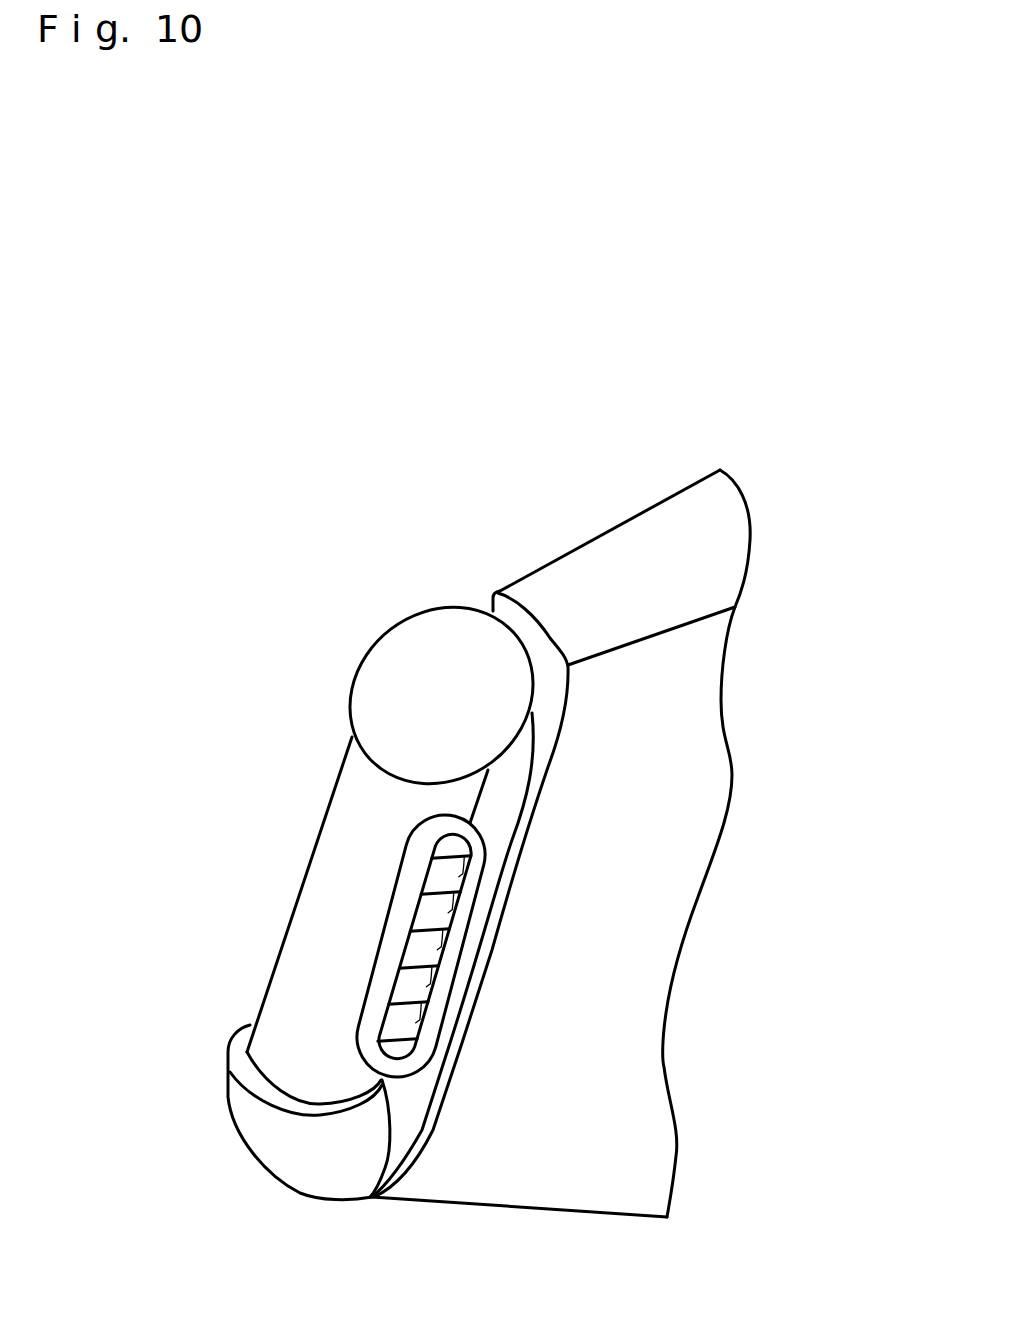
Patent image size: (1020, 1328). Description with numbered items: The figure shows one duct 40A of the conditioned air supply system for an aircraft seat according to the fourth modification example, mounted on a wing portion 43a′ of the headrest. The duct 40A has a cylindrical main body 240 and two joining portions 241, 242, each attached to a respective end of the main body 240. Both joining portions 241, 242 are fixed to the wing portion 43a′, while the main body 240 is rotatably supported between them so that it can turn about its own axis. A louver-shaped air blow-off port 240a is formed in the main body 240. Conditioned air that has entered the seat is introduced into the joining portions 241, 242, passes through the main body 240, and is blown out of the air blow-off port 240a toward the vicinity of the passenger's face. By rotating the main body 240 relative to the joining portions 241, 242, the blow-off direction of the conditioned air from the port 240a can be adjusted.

The duct 40A is at (350, 664).
The main body 240 is at (350, 843).
The air blow-off port 240a is at (430, 918).
The joining portion 241 is at (435, 628).
The joining portion 242 is at (280, 1138).
The wing portion 43a′ is at (680, 710).